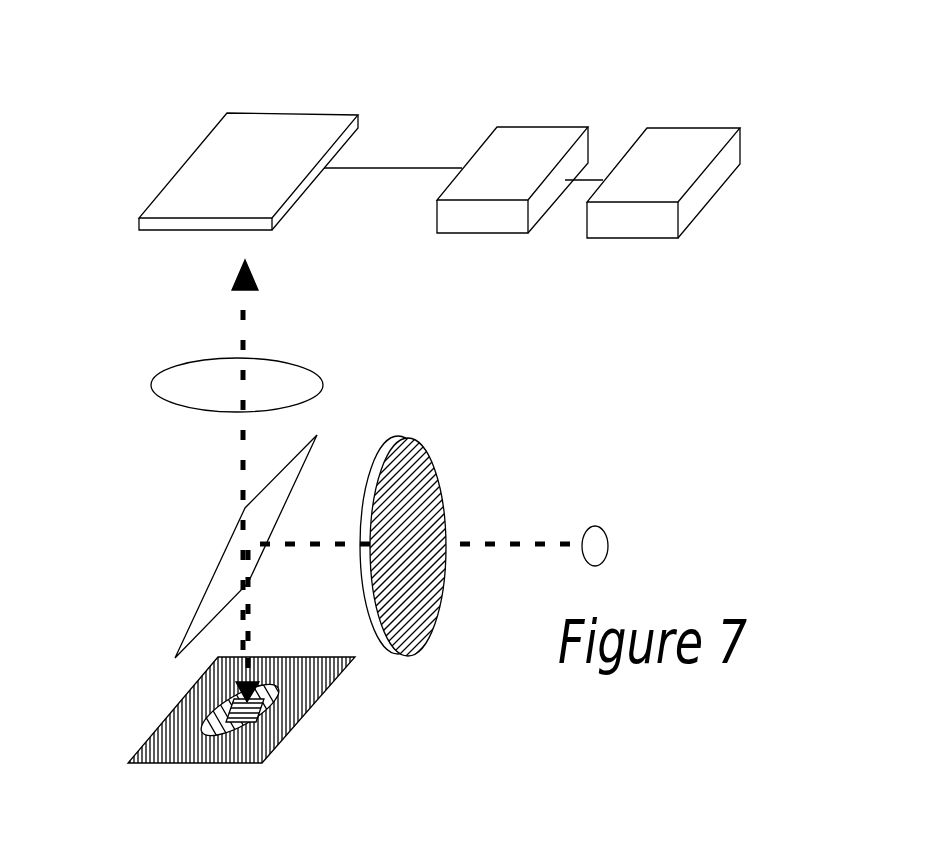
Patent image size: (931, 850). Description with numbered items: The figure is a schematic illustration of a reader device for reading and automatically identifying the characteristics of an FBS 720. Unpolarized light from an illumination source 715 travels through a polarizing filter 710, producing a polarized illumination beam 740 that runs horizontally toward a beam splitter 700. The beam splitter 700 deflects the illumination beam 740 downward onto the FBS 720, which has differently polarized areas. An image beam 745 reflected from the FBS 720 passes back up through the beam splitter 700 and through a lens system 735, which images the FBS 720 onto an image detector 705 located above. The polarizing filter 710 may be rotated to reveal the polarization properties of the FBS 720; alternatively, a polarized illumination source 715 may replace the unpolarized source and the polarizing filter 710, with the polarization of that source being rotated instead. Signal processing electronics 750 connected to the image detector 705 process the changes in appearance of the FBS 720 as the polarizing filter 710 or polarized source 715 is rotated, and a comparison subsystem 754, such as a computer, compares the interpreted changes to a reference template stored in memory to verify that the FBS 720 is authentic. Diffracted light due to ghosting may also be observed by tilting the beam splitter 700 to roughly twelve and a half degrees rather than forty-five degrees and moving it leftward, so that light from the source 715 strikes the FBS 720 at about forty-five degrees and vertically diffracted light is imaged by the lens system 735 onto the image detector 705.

The beam splitter 700 is at (220, 573).
The image detector 705 is at (302, 140).
The polarizing filter 710 is at (422, 475).
The illumination source 715 is at (607, 533).
The FBS 720 is at (305, 692).
The lens system 735 is at (177, 380).
The illumination beam 740 is at (482, 540).
The image beam 745 is at (235, 627).
The signal processing electronics 750 is at (537, 145).
The comparison subsystem 754 is at (688, 148).